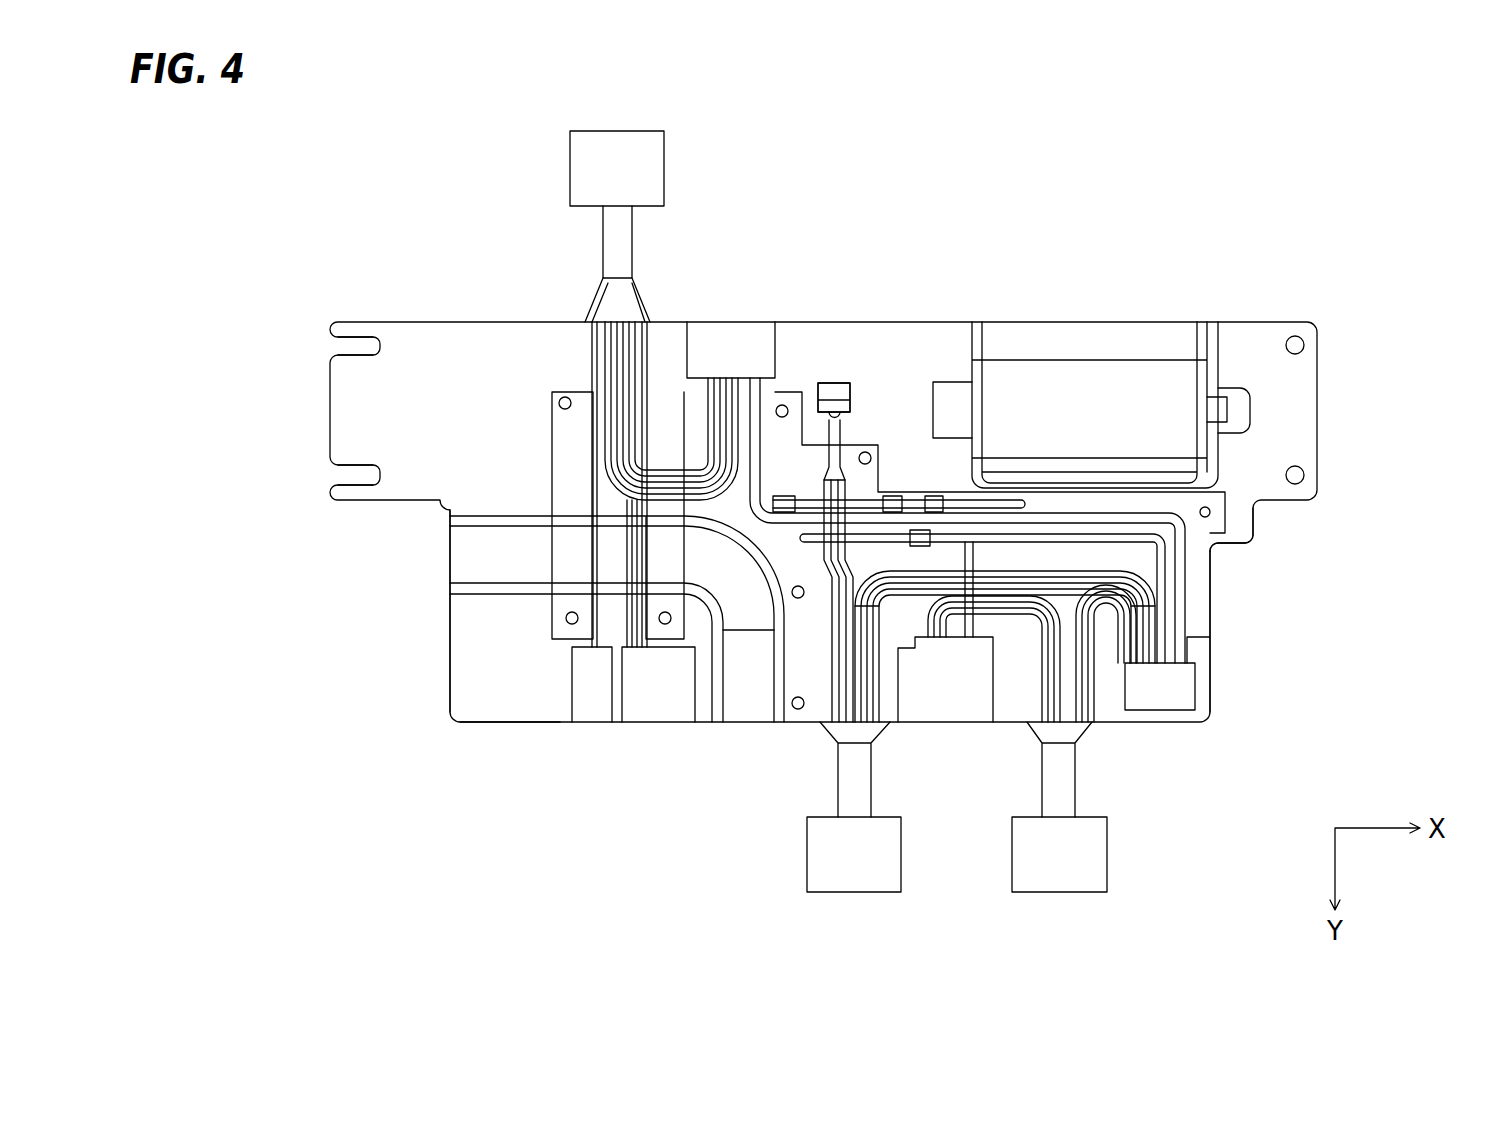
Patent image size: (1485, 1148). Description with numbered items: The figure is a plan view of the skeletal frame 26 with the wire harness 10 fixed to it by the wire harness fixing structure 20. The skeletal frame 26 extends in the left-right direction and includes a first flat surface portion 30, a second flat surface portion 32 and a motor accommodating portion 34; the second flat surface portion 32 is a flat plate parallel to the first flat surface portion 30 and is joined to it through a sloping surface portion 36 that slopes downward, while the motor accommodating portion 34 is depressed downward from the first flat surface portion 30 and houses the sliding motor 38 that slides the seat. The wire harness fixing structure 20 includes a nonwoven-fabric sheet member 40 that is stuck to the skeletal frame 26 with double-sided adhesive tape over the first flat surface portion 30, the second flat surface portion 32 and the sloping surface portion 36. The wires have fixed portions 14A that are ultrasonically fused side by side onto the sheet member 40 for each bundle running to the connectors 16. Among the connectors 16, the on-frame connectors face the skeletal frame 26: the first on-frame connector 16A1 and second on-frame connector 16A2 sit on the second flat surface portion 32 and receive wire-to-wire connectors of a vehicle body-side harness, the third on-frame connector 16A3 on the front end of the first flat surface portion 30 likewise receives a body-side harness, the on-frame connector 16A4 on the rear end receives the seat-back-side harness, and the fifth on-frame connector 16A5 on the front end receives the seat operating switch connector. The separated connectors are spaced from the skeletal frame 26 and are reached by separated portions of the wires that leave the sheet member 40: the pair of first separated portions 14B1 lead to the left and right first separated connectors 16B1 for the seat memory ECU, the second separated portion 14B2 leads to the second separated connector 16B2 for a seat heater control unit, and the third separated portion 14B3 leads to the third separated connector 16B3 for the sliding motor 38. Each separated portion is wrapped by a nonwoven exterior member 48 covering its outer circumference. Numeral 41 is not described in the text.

The wire harness 10 is at (900, 232).
The fixed portions 14A is at (628, 575).
The first separated portions 14B1 is at (891, 790).
The second separated portion 14B2 is at (588, 244).
The third separated portion 14B3 is at (851, 426).
The connectors 16 is at (1097, 908).
The first on-frame connector 16A1 is at (590, 708).
The second on-frame connector 16A2 is at (655, 703).
The third on-frame connector 16A3 is at (948, 702).
The on-frame connector 16A4 is at (731, 345).
The fifth on-frame connector 16A5 is at (1180, 705).
The first separated connectors 16B1 is at (1047, 848).
The second separated connector 16B2 is at (616, 140).
The third separated connector 16B3 is at (832, 380).
The wire harness fixing structure 20 is at (537, 394).
The skeletal frame 26 is at (309, 415).
The first flat surface portion 30 is at (398, 352).
The second flat surface portion 32 is at (462, 703).
The motor accommodating portion 34 is at (1180, 345).
The sloping surface portion 36 is at (470, 546).
The sliding motor 38 is at (1190, 410).
The sheet member 40 is at (1200, 587).
The corner notch 41 is at (1212, 546).
The exterior members 48 is at (622, 240).